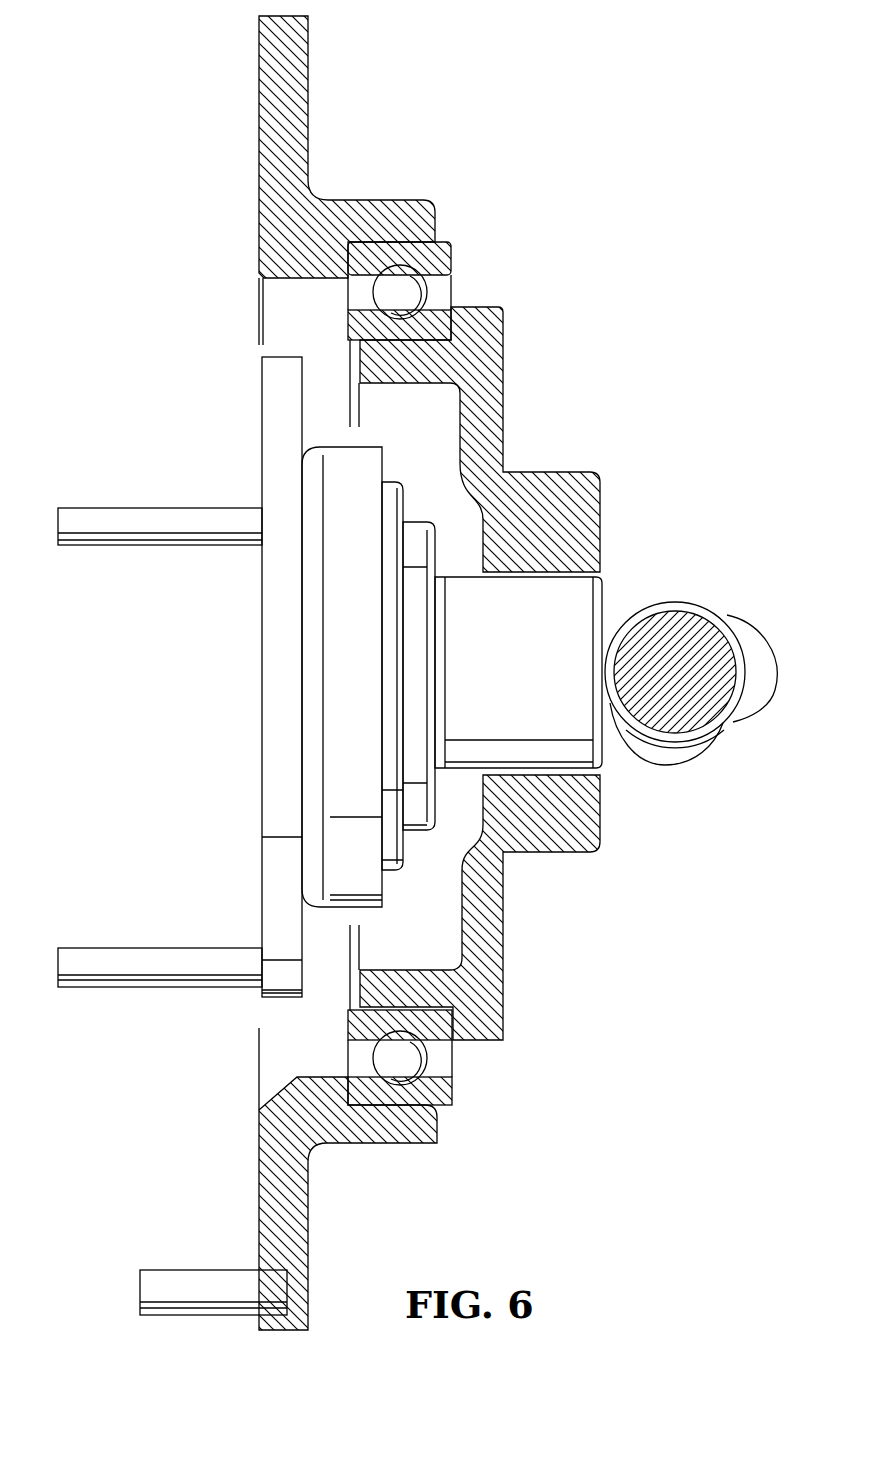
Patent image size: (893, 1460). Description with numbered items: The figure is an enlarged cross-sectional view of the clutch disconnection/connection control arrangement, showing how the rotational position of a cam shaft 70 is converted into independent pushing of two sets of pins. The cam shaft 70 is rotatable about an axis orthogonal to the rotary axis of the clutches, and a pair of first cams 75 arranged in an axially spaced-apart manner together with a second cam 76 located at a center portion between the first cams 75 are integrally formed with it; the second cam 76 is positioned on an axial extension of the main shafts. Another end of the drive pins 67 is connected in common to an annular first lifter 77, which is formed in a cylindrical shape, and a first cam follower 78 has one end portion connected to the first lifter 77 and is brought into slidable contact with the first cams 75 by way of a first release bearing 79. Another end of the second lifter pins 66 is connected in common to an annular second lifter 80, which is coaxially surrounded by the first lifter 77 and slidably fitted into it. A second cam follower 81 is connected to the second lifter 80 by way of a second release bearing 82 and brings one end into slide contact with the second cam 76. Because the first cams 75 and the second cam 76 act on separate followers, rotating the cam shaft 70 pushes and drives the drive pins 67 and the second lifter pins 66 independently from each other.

The second lifter pins 66 is at (187, 518).
The drive pins 67 is at (197, 1278).
The cam shaft 70 is at (668, 633).
The first cams 75 is at (760, 652).
The second cam 76 is at (678, 752).
The first lifter 77 is at (297, 1237).
The first cam follower 78 is at (493, 903).
The first release bearing 79 is at (413, 1063).
The second lifter 80 is at (277, 729).
The second cam follower 81 is at (580, 728).
The second release bearing 82 is at (393, 500).